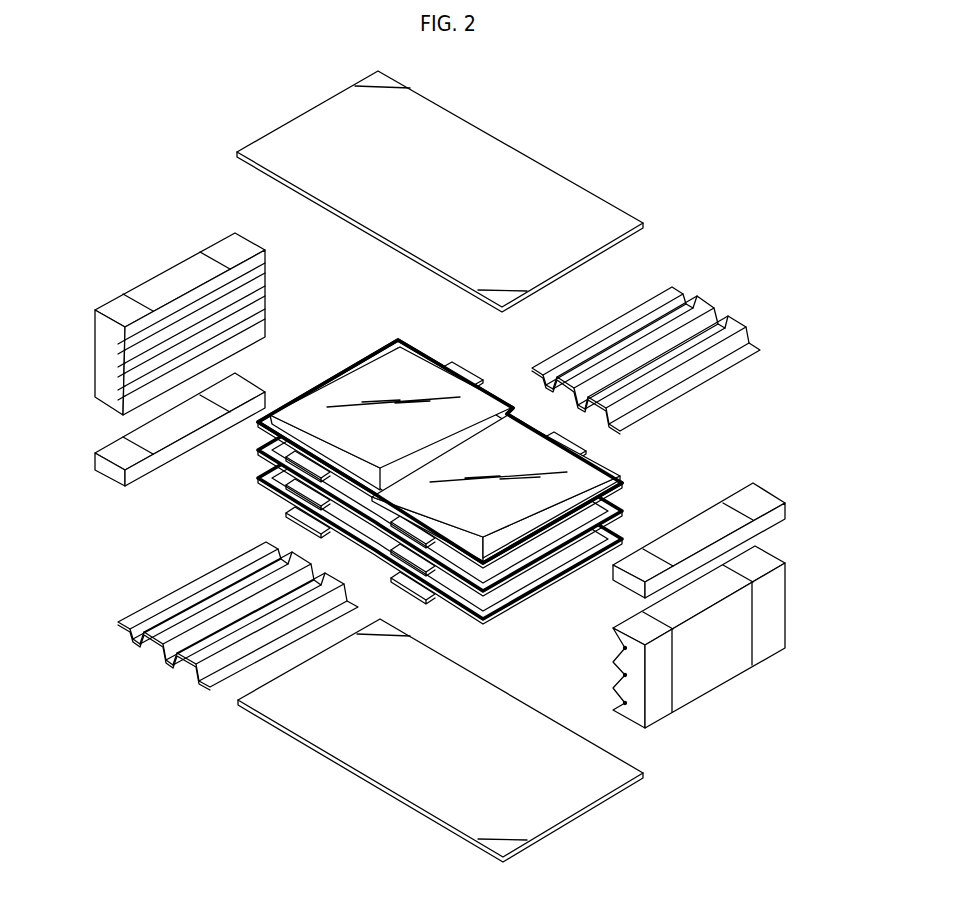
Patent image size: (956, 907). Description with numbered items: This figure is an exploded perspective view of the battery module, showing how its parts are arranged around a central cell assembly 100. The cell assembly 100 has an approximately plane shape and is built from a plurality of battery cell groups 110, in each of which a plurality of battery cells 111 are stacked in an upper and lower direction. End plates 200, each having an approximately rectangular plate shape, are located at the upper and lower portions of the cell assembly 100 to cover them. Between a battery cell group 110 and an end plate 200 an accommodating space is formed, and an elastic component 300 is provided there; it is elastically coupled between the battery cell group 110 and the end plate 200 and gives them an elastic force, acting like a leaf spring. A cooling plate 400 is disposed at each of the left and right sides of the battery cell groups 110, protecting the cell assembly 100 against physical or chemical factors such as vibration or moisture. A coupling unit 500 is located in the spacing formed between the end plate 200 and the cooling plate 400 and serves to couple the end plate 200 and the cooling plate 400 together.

The cell assembly 100 is at (379, 510).
The battery cell group 110 is at (379, 482).
The battery cell 111 is at (261, 456).
The end plate 200 is at (490, 148).
The elastic component 300 is at (712, 320).
The cooling plate 400 is at (170, 280).
The coupling unit 500 is at (110, 446).